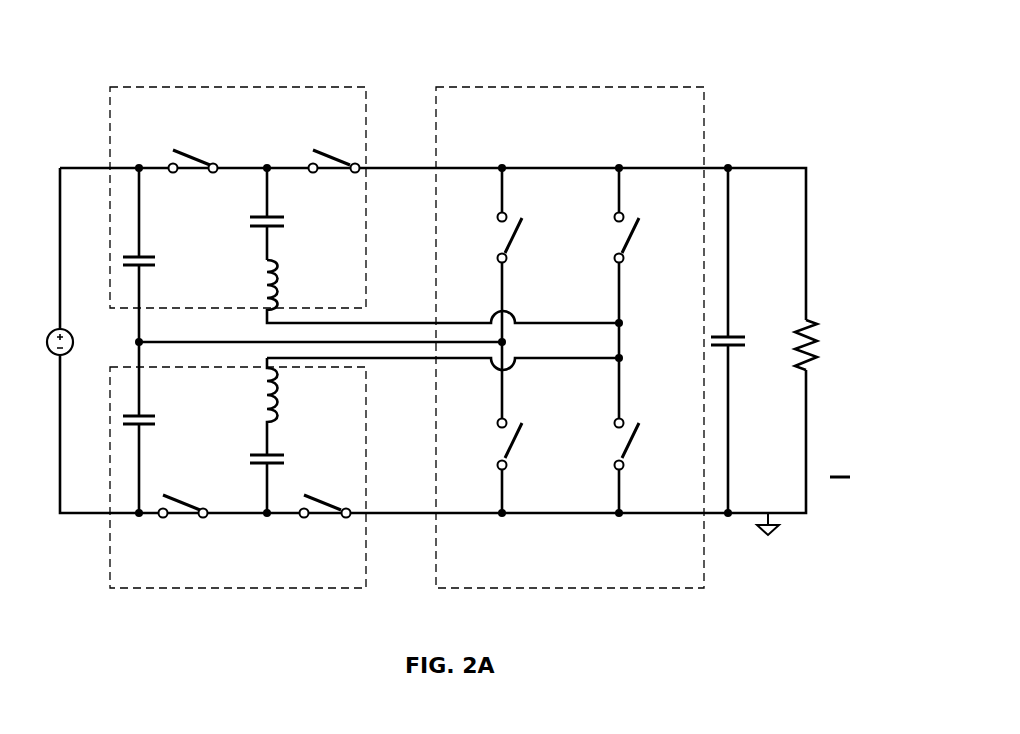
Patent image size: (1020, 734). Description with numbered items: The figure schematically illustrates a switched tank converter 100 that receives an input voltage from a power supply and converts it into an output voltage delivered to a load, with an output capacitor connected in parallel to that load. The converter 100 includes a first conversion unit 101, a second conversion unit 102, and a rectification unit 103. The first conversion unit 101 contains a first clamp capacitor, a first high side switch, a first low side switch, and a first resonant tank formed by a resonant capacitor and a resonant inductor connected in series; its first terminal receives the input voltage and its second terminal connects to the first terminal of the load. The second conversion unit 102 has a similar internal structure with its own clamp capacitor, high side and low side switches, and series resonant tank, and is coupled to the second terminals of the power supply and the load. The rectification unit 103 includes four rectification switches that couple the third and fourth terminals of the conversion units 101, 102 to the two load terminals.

The switched tank converter 100 is at (810, 65).
The first conversion unit 101 is at (180, 87).
The second conversion unit 102 is at (158, 588).
The rectification unit 103 is at (507, 87).